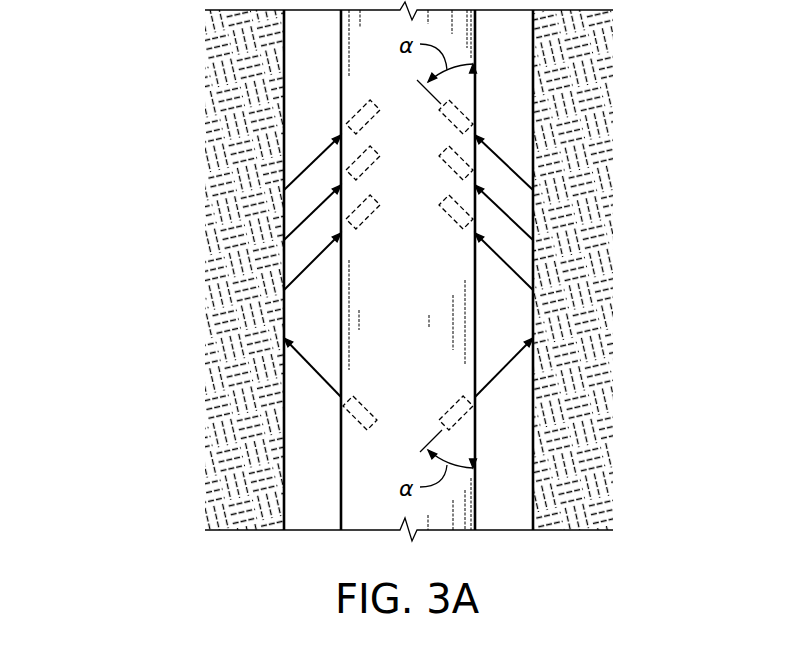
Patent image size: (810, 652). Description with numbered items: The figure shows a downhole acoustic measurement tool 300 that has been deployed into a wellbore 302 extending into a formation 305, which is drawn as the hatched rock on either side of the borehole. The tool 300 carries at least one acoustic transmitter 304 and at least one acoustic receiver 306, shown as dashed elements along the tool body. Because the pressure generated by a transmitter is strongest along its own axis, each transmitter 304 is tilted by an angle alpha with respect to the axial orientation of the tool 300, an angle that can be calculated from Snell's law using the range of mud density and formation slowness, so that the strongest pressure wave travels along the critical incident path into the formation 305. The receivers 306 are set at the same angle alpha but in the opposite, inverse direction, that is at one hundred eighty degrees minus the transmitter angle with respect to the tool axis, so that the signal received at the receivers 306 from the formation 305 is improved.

The downhole acoustic measurement tool 300 is at (340, 327).
The wellbore 302 is at (296, 64).
The acoustic transmitter 304 is at (462, 422).
The formation 305 is at (233, 143).
The acoustic receiver 306 is at (463, 110).